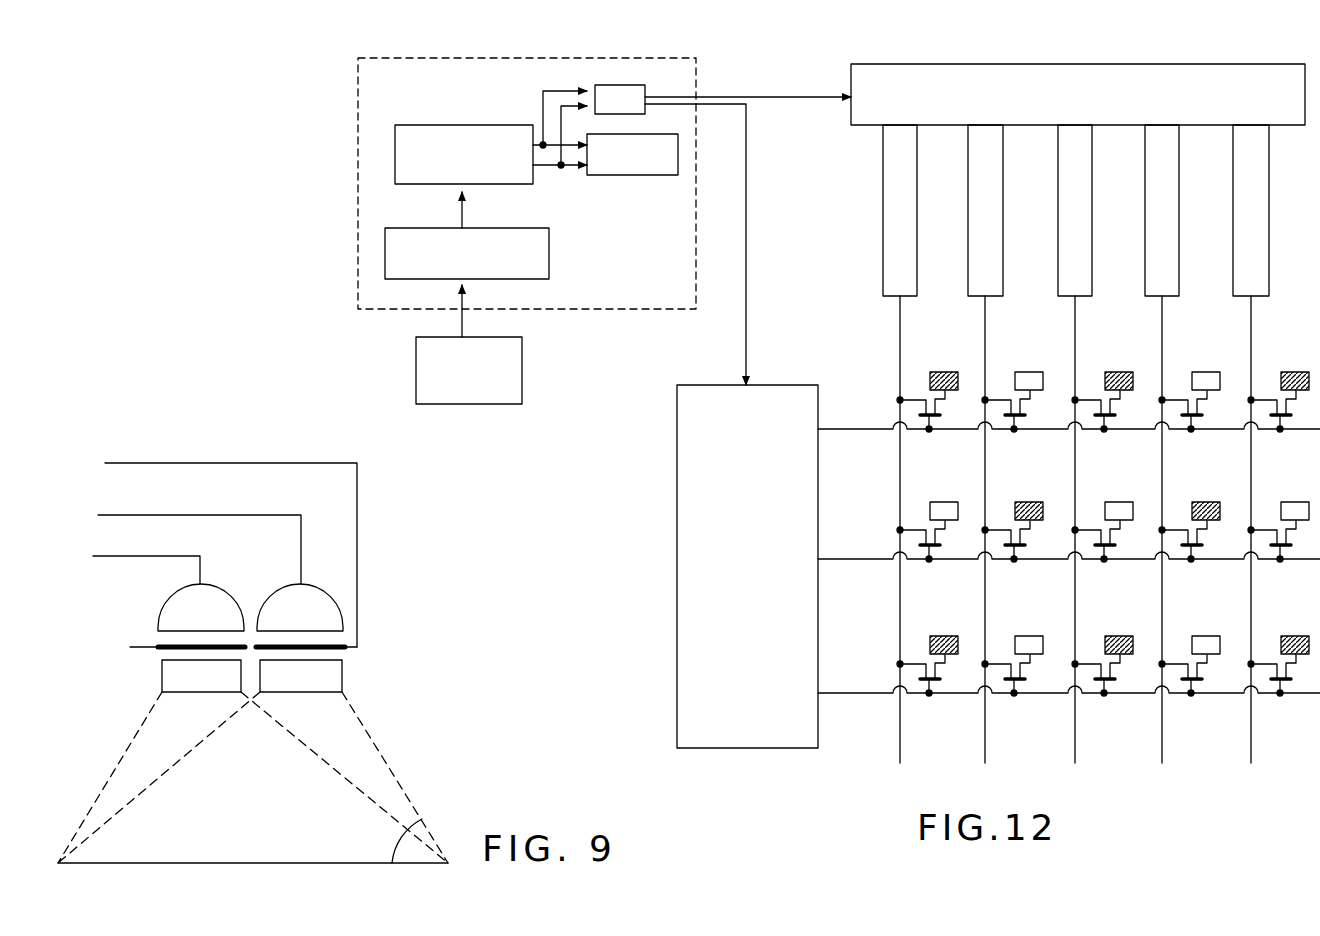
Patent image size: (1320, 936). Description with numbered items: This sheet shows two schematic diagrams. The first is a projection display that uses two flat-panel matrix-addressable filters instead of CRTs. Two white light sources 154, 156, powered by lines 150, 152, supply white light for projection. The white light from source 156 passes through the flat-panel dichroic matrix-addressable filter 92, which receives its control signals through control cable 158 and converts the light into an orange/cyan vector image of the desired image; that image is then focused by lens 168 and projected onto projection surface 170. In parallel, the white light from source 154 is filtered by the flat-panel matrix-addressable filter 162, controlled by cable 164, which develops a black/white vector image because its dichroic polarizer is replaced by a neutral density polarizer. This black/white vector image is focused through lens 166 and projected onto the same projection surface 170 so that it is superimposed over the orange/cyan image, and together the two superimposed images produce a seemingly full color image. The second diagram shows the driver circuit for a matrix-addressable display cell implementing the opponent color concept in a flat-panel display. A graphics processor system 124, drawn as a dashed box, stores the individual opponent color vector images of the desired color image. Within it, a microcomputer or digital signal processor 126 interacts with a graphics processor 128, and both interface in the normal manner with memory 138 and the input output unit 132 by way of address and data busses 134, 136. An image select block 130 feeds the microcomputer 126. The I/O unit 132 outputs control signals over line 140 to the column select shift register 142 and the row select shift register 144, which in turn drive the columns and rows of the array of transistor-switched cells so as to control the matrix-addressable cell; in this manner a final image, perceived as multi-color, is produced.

In FIG. 9, the flat-panel dichroic matrix-addressable filter 92 is at (342, 643).
In FIG. 12, the graphics processor system 124 is at (507, 83).
In FIG. 12, the microcomputer 126 is at (415, 275).
In FIG. 12, the graphics processor 128 is at (507, 184).
In FIG. 12, the image select 130 is at (522, 378).
In FIG. 12, the input output unit (I/O) 132 is at (627, 85).
In FIG. 12, the address and data bus 134 is at (572, 91).
In FIG. 12, the address and data bus 136 is at (548, 167).
In FIG. 12, the memory 138 is at (612, 175).
In FIG. 12, the control line 140 is at (813, 82).
In FIG. 12, the column select shift register 142 is at (1271, 88).
In FIG. 12, the row select shift register 144 is at (685, 590).
In FIG. 9, the power line 150 is at (201, 575).
In FIG. 9, the power line 152 is at (168, 515).
In FIG. 9, the white light source 154 is at (177, 603).
In FIG. 9, the white light source 156 is at (312, 618).
In FIG. 9, the control cable 158 is at (200, 463).
In FIG. 9, the flat-panel matrix-addressable filter 162 is at (190, 645).
In FIG. 9, the control cable 164 is at (147, 648).
In FIG. 9, the lens 166 is at (175, 672).
In FIG. 9, the lens 168 is at (342, 673).
In FIG. 9, the projection surface 170 is at (422, 819).